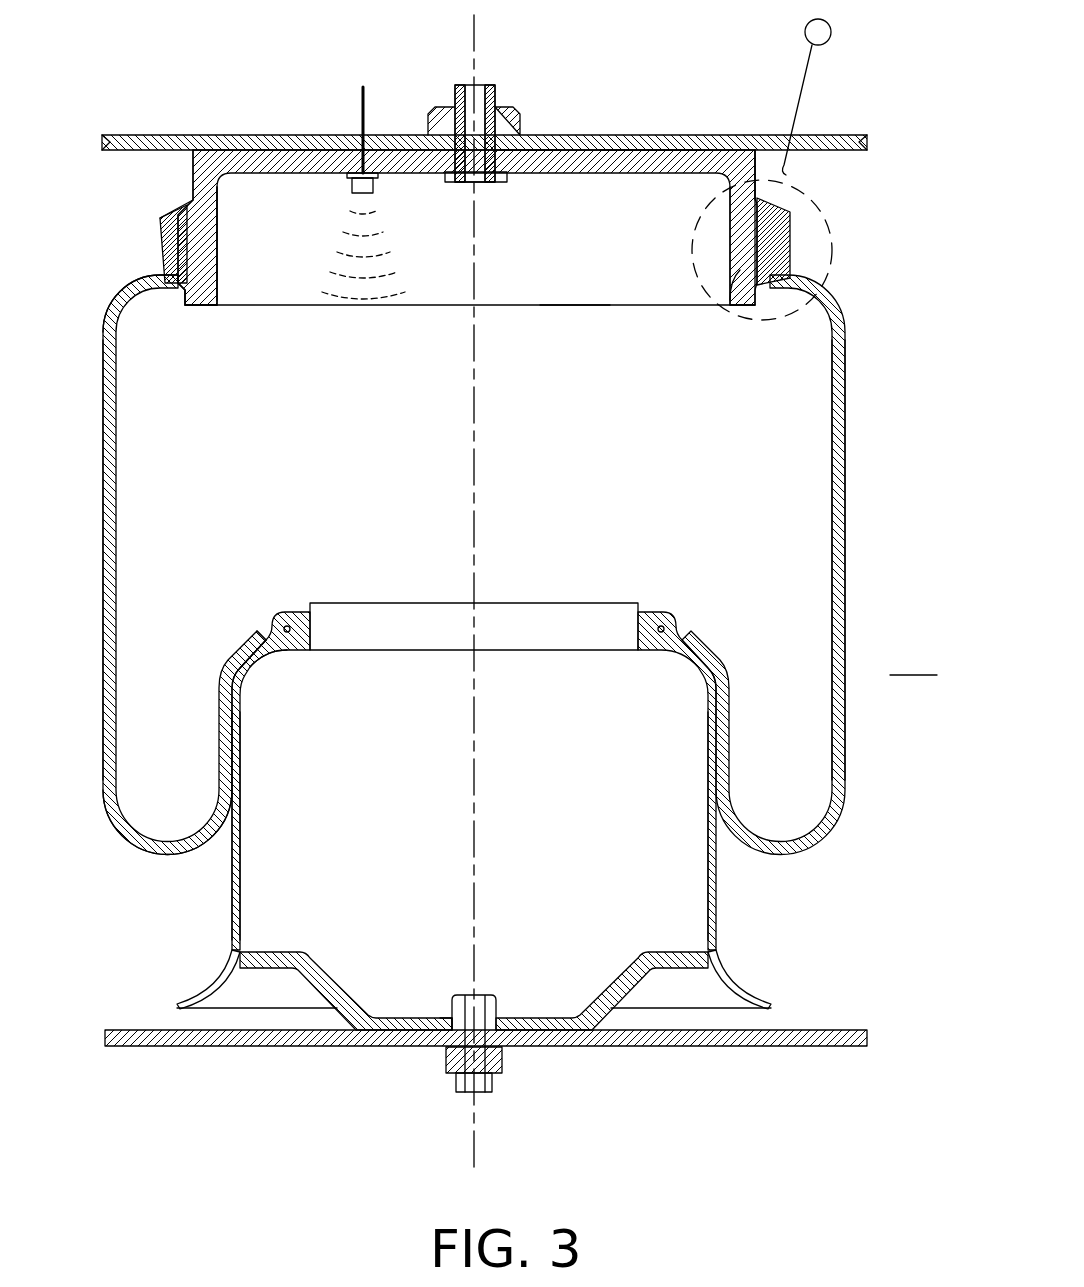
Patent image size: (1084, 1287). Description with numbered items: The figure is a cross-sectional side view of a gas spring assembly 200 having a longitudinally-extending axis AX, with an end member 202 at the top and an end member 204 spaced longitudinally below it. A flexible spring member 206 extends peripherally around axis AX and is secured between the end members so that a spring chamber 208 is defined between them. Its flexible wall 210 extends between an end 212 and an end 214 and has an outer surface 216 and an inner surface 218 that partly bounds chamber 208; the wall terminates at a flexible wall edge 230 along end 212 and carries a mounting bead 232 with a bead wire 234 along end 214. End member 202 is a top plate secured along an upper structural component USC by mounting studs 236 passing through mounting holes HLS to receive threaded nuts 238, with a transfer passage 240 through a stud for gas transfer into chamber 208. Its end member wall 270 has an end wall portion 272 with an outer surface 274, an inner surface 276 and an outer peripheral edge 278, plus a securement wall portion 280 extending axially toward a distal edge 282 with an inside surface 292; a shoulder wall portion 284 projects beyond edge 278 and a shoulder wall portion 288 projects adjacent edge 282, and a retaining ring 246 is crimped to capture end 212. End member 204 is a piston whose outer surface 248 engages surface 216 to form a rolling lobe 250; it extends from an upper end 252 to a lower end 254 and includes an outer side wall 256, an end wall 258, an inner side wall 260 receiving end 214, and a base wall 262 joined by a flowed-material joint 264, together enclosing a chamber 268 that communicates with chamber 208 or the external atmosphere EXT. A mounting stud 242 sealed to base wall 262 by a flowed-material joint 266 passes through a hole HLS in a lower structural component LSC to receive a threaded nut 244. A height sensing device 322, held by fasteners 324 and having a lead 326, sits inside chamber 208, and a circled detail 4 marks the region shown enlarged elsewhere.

The gas spring assembly 200 is at (855, 235).
The end member 202 is at (455, 236).
The end member 204 is at (471, 826).
The flexible spring member 206 is at (514, 545).
The spring chamber 208 is at (800, 430).
The flexible wall 210 is at (848, 548).
The end 212 is at (142, 325).
The end 214 is at (232, 630).
The outer surface 216 is at (848, 615).
The inner surface 218 is at (832, 505).
The flexible wall edge 230 is at (162, 217).
The mounting bead 232 is at (268, 620).
The bead wire 234 is at (288, 625).
The mounting stud 236 is at (519, 91).
The threaded nut 238 is at (520, 118).
The transfer passage 240 is at (474, 80).
The mounting stud 242 is at (435, 1057).
The threaded nut 244 is at (446, 1058).
The retaining ring 246 is at (158, 250).
The outer surface 248 is at (232, 900).
The rolling lobe 250 is at (168, 850).
The upper end 252 is at (217, 683).
The lower end 254 is at (173, 997).
The outer side wall 256 is at (240, 856).
The end wall 258 is at (283, 652).
The inner side wall 260 is at (313, 623).
The base wall 262 is at (625, 995).
The flowed-material joint 264 is at (235, 968).
The flowed-material joint 266 is at (500, 1015).
The chamber 268 is at (652, 780).
The end member wall 270 is at (240, 150).
The end wall portion 272 is at (282, 160).
The outer surface 274 is at (600, 160).
The inner surface 276 is at (680, 165).
The outer peripheral edge 278 is at (765, 160).
The securement wall portion 280 is at (205, 267).
The distal edge 282 is at (572, 307).
The shoulder wall portion 284 is at (790, 210).
The shoulder wall portion 288 is at (180, 290).
The inside surface 292 is at (740, 285).
The height sensing device 322 is at (388, 200).
The fasteners 324 is at (412, 166).
The lead 326 is at (366, 100).
The detail view circle FIG. 4 is at (806, 97).
The longitudinally-extending axis AX is at (476, 500).
The upper structural component USC is at (152, 140).
The lower structural component LSC is at (175, 1048).
The mounting holes HLS is at (530, 148).
The external atmosphere EXT is at (915, 660).